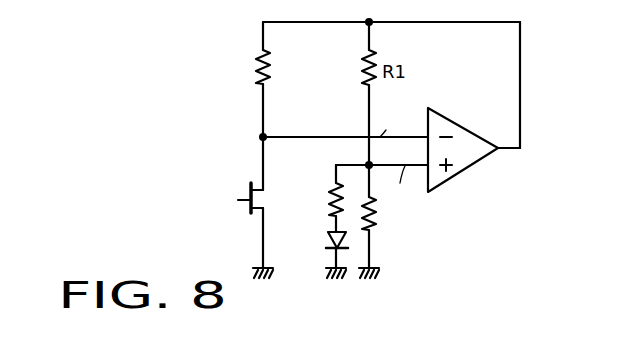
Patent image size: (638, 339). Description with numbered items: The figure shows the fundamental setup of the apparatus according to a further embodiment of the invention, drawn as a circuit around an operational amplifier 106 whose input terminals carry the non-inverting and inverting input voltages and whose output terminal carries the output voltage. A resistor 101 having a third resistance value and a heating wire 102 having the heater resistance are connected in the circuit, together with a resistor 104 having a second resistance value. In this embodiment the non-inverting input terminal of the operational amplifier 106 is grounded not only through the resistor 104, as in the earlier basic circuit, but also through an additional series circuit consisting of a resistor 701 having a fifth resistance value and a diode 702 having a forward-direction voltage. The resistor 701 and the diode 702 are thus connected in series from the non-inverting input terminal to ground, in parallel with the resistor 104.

The resistor 101 is at (257, 71).
The heating wire 102 is at (238, 200).
The resistor 104 is at (378, 232).
The operational circuit 106 is at (474, 165).
The resistor 701 is at (333, 184).
The diode 702 is at (330, 250).